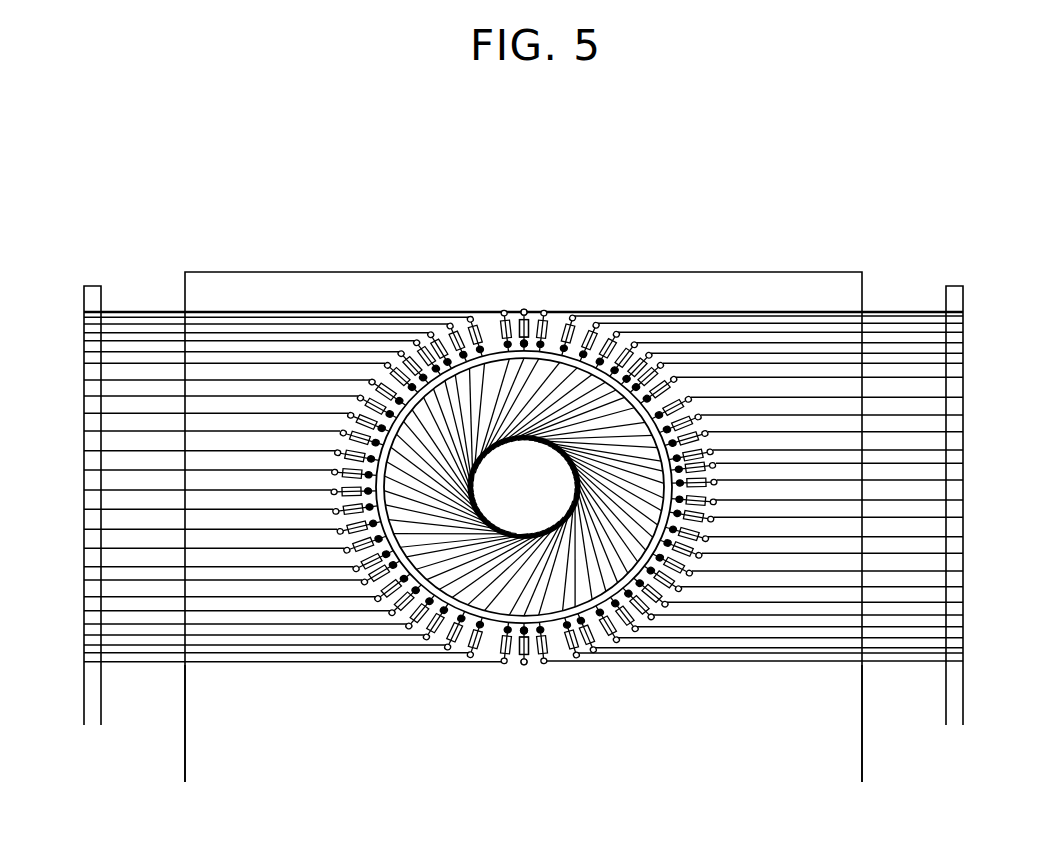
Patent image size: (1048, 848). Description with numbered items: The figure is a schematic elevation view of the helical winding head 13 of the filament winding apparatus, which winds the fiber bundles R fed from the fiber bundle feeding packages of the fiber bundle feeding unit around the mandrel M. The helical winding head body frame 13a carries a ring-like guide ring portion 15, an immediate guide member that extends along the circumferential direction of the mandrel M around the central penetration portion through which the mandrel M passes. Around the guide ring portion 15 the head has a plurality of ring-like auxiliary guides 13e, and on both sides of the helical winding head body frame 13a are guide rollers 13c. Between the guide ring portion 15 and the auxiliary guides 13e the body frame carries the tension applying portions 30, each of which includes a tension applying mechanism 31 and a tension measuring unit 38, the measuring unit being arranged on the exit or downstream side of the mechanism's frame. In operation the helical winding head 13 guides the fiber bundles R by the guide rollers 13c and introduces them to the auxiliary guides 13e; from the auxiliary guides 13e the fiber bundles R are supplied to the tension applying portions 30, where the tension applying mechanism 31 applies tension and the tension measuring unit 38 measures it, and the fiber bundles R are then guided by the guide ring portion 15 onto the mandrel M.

The helical winding head 13 is at (391, 266).
The helical winding head body frame 13a is at (840, 745).
The guide rollers 13c is at (92, 298).
The auxiliary guides 13e is at (545, 308).
The guide ring portion 15 is at (538, 624).
The tension applying portions 30 is at (567, 173).
The tension applying mechanism 31 is at (538, 307).
The tension measuring unit 38 is at (533, 323).
The fiber bundles R is at (125, 491).
The mandrel M is at (556, 492).